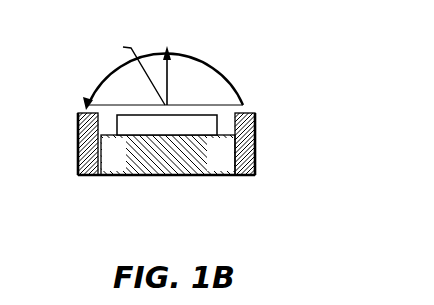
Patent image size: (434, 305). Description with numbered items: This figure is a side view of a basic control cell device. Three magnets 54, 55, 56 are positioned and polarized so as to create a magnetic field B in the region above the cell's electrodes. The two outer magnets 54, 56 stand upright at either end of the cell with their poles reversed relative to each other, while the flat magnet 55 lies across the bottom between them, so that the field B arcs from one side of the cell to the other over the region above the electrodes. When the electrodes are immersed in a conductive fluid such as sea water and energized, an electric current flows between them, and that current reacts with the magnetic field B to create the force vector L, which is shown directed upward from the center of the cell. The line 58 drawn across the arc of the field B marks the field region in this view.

The magnet 54 is at (62, 148).
The magnet 55 is at (167, 177).
The magnet 56 is at (270, 148).
The magnetic field line 58 is at (128, 69).
The force vector L is at (177, 60).
The magnetic field B is at (213, 66).